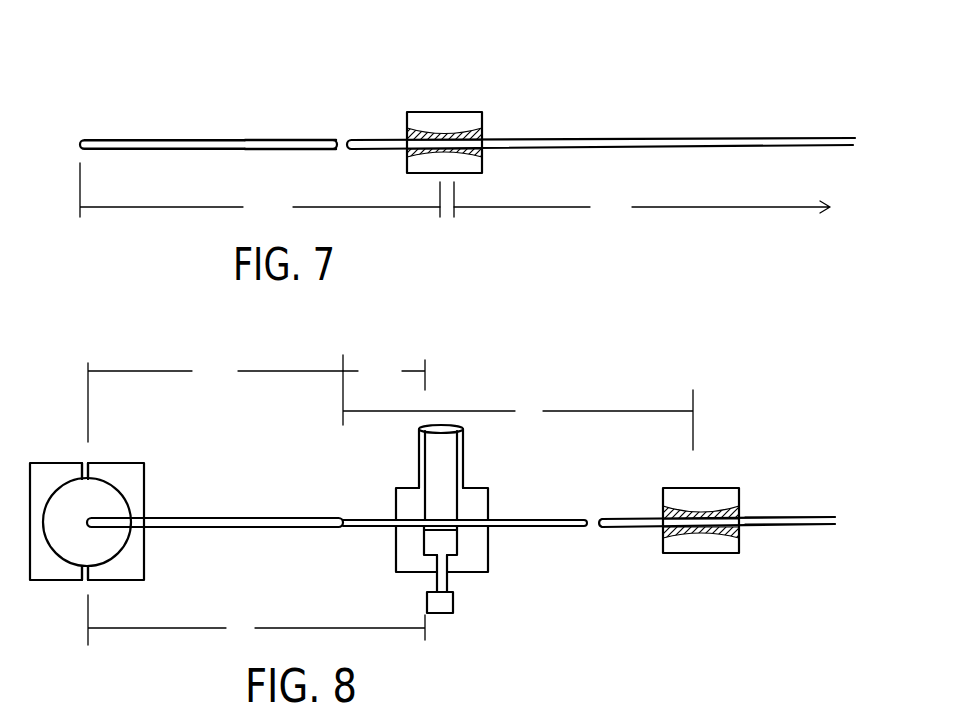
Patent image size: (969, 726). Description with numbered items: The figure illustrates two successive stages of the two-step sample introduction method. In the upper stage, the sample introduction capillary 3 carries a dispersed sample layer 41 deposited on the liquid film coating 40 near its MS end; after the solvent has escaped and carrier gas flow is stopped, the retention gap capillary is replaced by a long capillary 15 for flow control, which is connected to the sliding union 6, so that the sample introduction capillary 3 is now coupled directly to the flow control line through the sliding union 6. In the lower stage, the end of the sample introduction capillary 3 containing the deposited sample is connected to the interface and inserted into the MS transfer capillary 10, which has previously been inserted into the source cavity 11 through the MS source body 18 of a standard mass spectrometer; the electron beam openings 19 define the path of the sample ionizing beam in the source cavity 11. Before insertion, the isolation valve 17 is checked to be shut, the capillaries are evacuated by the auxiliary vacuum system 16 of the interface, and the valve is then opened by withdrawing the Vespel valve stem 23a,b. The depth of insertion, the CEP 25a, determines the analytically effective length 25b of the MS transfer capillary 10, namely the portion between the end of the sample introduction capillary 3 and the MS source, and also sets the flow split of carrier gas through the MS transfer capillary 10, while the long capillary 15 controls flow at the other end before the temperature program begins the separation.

In FIG. 7, the sample introduction capillary 3 is at (305, 148).
In FIG. 8, the sample introduction capillary 3 is at (560, 519).
In FIG. 7, the sliding union 6 is at (451, 114).
In FIG. 8, the sliding union 6 is at (688, 498).
In FIG. 8, the MS transfer capillary 10 is at (275, 528).
In FIG. 8, the source cavity 11 is at (132, 485).
In FIG. 7, the long capillary 15 is at (633, 144).
In FIG. 8, the long capillary 15 is at (784, 517).
In FIG. 8, the auxiliary vacuum system 16 is at (445, 447).
In FIG. 8, the isolation valve 17 is at (445, 601).
In FIG. 8, the MS source body 18 is at (133, 547).
In FIG. 8, the electron beam openings 19 is at (85, 462).
In FIG. 8, the Vespel valve stem 23a,b is at (440, 540).
In FIG. 8, the CEP 25a is at (384, 374).
In FIG. 8, the analytically effective length 25b is at (215, 400).
In FIG. 7, the liquid film coating 40 is at (198, 139).
In FIG. 7, the dispersed sample layer 41 is at (278, 139).